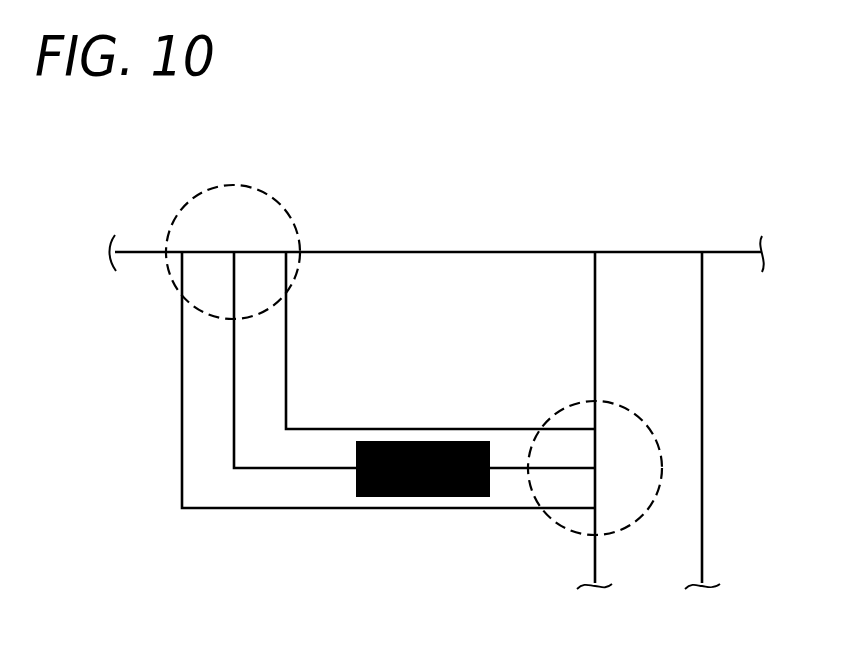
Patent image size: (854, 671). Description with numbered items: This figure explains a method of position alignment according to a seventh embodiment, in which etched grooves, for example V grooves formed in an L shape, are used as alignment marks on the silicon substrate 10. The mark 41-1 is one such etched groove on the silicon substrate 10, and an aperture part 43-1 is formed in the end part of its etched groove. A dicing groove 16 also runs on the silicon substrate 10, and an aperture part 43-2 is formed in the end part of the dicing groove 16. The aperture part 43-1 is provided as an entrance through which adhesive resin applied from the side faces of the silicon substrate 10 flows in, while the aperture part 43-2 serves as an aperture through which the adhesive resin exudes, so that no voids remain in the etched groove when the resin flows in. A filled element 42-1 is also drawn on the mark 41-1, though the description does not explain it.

The silicon substrate 10 is at (487, 273).
The dicing groove 16 is at (680, 337).
The mark 41-1 is at (197, 423).
The element 42-1 is at (422, 497).
The aperture part 43-1 is at (272, 198).
The aperture part 43-2 is at (637, 520).